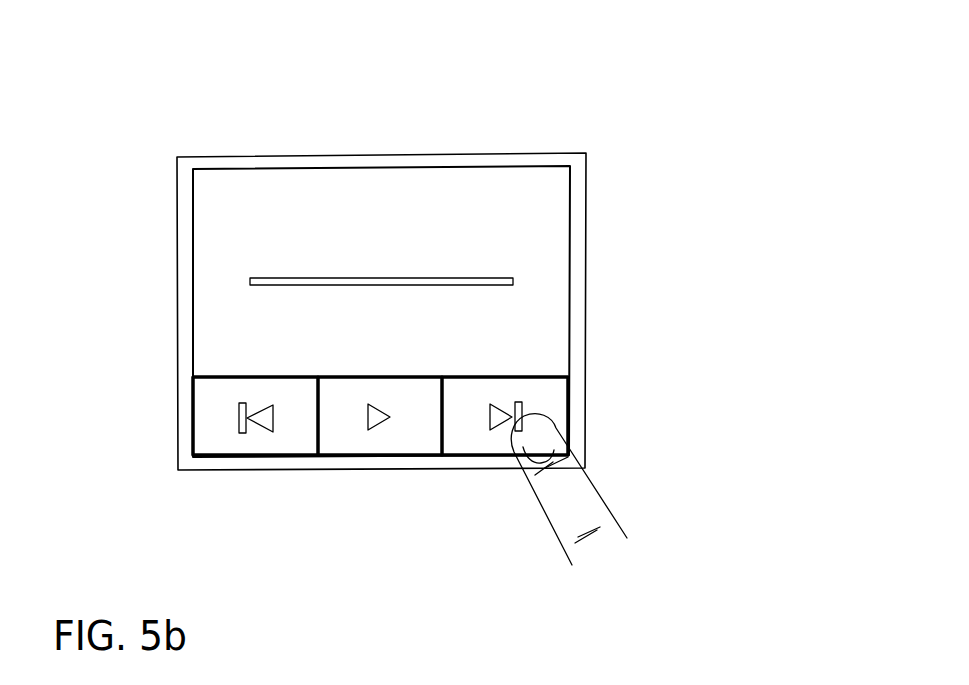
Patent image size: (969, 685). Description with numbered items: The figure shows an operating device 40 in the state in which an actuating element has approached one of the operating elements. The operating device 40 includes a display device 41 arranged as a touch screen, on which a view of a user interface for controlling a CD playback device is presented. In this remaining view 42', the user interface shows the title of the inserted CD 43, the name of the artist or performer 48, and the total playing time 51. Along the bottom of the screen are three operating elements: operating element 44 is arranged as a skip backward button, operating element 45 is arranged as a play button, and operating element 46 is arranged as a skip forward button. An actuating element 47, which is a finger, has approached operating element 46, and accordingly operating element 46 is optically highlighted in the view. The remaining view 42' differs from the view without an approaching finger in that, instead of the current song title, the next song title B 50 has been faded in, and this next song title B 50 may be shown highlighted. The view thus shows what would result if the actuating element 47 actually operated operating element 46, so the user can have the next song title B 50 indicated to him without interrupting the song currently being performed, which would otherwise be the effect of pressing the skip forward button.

The operating device 40 is at (556, 115).
The display device 41 is at (587, 222).
The remaining view 42' is at (448, 272).
The title of inserted CD 43 is at (440, 352).
The operating element 44 is at (211, 446).
The operating element 45 is at (336, 444).
The operating element 46 is at (463, 442).
The actuating element 47 is at (583, 494).
The name of the artist 48 is at (375, 190).
The next song title B 50 is at (433, 229).
The total playing time 51 is at (502, 280).